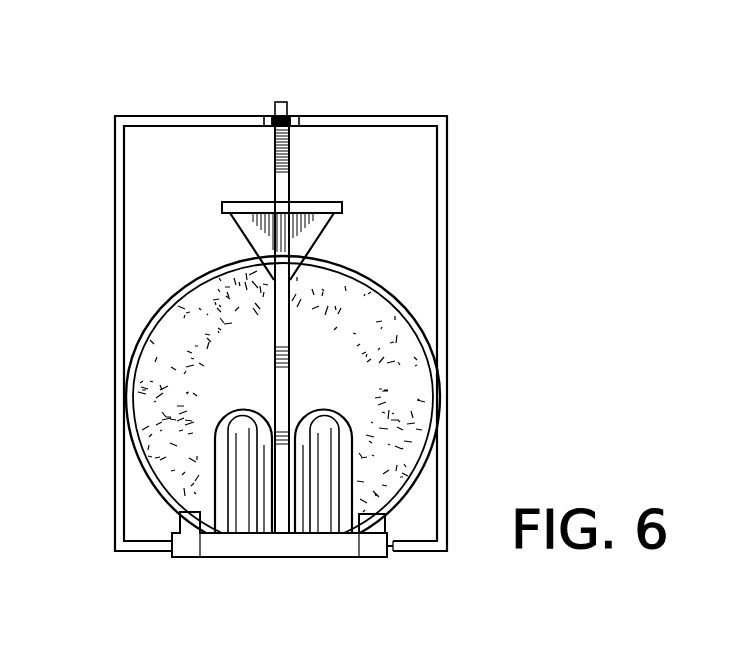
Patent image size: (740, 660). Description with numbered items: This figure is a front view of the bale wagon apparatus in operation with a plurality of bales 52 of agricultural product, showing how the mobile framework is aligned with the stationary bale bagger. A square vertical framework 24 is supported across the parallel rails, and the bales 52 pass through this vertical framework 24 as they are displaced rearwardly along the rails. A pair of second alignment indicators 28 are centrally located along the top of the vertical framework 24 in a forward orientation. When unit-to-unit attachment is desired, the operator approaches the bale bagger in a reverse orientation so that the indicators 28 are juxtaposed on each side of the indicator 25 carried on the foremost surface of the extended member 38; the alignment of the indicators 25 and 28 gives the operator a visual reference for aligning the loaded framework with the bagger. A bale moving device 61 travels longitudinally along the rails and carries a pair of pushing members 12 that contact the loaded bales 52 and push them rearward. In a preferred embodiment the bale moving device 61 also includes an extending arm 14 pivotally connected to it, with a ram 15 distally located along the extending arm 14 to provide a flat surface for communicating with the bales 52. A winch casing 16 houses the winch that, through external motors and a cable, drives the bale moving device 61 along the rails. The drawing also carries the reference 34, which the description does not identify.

The pushing members 12 is at (220, 443).
The extending arm 14 is at (277, 312).
The ram 15 is at (313, 205).
The winch casing 16 is at (248, 545).
The square vertical framework 24 is at (167, 120).
The indicator 25 is at (281, 102).
The second alignment indicators 28 is at (267, 119).
The outer shell 34 is at (407, 315).
The extended member 38 is at (275, 160).
The bales of agricultural product 52 is at (330, 290).
The bale moving device 61 is at (315, 402).